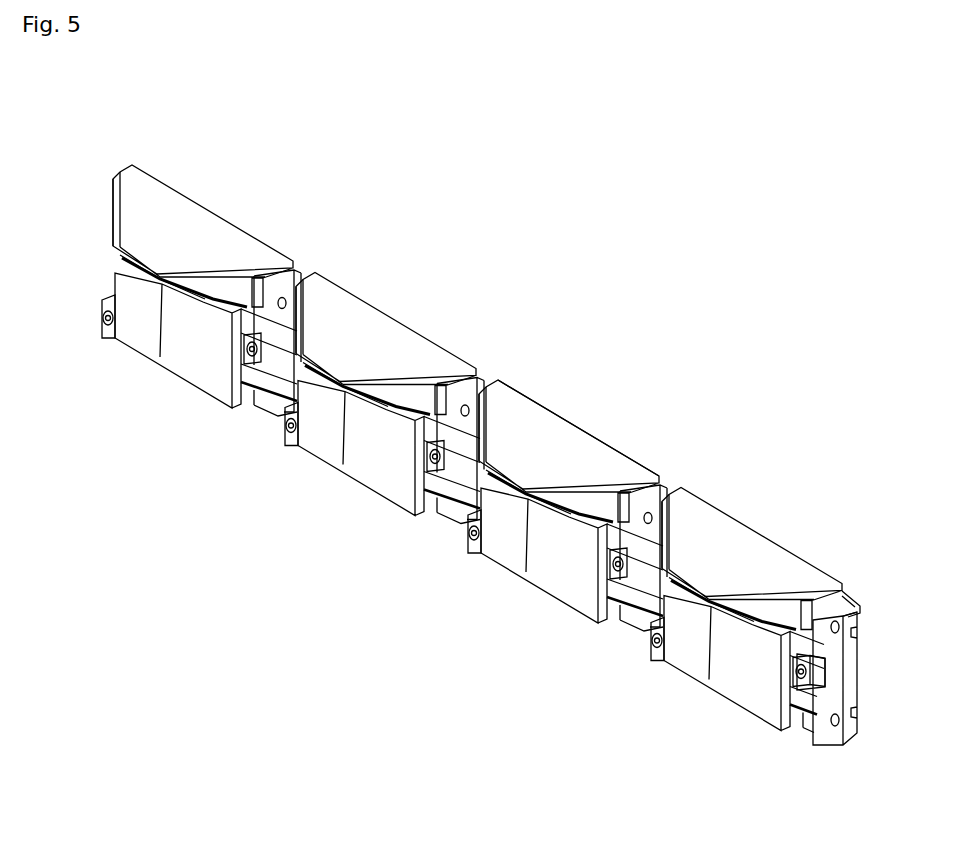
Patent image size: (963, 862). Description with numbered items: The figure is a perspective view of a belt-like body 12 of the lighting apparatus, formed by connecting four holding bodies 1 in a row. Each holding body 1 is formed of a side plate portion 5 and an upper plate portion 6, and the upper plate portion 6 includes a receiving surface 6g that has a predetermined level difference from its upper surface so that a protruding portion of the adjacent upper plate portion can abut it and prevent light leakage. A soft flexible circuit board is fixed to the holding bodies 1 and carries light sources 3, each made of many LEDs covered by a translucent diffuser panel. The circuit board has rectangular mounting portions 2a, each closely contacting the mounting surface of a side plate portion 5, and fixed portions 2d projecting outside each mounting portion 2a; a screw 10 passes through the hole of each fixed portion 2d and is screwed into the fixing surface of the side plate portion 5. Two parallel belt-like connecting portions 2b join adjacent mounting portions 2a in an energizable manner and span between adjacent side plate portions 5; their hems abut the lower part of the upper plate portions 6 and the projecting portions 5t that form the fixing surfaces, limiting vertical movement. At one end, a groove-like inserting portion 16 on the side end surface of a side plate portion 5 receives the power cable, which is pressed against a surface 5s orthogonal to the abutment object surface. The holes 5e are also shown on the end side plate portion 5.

The holding body 1 is at (177, 183).
The mounting portion 2a is at (242, 405).
The connecting portion 2b is at (262, 322).
The fixed portion 2d is at (102, 303).
The light source 3 is at (197, 367).
The side plate portion 5 is at (270, 413).
The hole 5e is at (419, 455).
The surface 5s is at (858, 620).
The projecting portion 5t is at (270, 357).
The upper plate portion 6 is at (165, 233).
The receiving surface 6g is at (113, 210).
The screw 10 is at (106, 330).
The belt-like body 12 is at (619, 447).
The inserting portion 16 is at (841, 609).